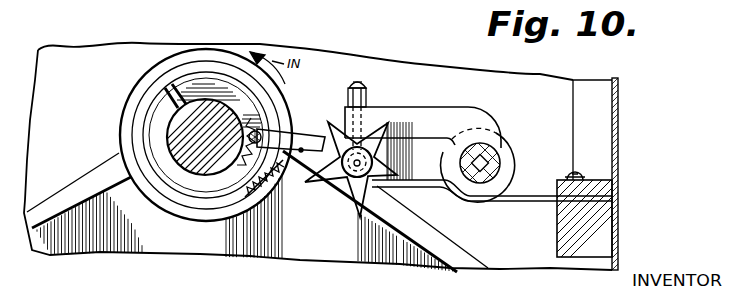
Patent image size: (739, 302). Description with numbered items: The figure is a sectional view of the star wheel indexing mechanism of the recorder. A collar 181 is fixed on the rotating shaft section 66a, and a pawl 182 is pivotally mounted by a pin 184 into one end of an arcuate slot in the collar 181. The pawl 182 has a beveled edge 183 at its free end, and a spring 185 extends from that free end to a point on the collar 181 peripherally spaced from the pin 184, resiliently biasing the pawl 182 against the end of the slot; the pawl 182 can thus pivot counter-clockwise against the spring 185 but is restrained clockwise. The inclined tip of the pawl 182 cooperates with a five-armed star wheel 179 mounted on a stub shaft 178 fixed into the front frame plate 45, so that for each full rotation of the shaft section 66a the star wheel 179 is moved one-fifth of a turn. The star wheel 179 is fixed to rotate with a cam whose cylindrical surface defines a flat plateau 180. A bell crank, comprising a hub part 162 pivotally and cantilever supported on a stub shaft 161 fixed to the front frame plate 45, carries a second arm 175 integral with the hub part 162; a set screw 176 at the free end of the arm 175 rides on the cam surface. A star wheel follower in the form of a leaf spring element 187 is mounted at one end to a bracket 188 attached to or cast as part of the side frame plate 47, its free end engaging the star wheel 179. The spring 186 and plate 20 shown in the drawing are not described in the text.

The shaft section 66a is at (208, 100).
The collar 181 is at (150, 128).
The pin 184 is at (268, 123).
The pawl 182 is at (295, 131).
The spring 186 is at (246, 182).
The beveled edge 183 is at (281, 177).
The spring 185 is at (268, 200).
The five-armed star wheel 179 is at (349, 220).
The stub shaft 178 is at (333, 196).
The set screw 176 is at (365, 82).
The second arm 175 is at (440, 110).
The flat plateau 180 is at (398, 149).
The stub shaft 161 is at (503, 155).
The hub part 162 is at (505, 172).
The leaf spring element 187 is at (428, 186).
The side plate 20 is at (620, 117).
The side frame plate 47 is at (597, 99).
The bracket 188 is at (600, 216).
The front frame plate 45 is at (350, 57).